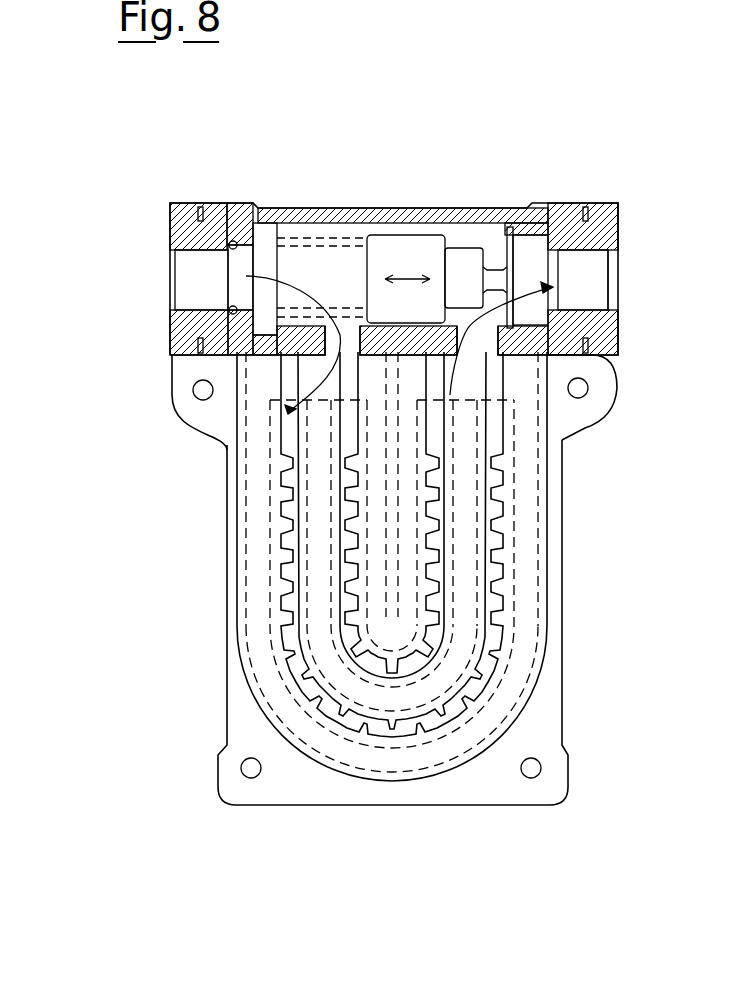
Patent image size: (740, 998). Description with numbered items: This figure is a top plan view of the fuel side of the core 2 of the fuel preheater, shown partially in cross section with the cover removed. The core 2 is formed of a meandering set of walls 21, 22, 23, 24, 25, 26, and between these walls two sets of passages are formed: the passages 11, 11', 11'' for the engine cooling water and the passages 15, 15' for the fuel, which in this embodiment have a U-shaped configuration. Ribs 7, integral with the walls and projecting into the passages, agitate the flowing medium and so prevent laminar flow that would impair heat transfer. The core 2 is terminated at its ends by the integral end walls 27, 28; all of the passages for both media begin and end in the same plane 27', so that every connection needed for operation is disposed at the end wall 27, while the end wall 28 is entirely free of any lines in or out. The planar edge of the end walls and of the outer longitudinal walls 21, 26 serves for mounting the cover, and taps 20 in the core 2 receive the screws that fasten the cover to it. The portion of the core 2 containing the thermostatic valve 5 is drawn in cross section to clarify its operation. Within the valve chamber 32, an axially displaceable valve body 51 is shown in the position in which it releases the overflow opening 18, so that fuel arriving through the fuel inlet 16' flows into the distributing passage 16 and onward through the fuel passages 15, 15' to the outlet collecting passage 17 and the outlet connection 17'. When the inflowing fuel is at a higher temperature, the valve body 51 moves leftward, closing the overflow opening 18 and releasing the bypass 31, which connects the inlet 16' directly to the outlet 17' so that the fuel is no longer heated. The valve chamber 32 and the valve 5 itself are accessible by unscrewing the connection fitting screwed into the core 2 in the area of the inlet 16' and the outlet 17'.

The core 2 is at (145, 529).
The thermostatic valve 5 is at (511, 227).
The ribs 7 is at (365, 738).
The passage 11 is at (331, 544).
The passage 11' is at (317, 555).
The passage 11'' is at (303, 543).
The passage 15 is at (302, 515).
The passage 15' is at (287, 531).
The distributing passage 16 is at (227, 489).
The fuel inlet 16' is at (167, 280).
The outlet collecting passage 17 is at (531, 489).
The outlet connection 17' is at (621, 280).
The overflow opening 18 is at (357, 422).
The taps 20 is at (582, 390).
The outer longitudinal wall 21 is at (543, 520).
The wall 22 is at (513, 550).
The wall 23 is at (490, 572).
The wall 24 is at (455, 590).
The wall 25 is at (430, 610).
The outer longitudinal wall 26 is at (393, 617).
The end wall 27 is at (500, 239).
The plane 27' is at (395, 382).
The end wall 28 is at (472, 783).
The bypass 31 is at (382, 222).
The valve chamber 32 is at (335, 245).
The valve body 51 is at (423, 255).